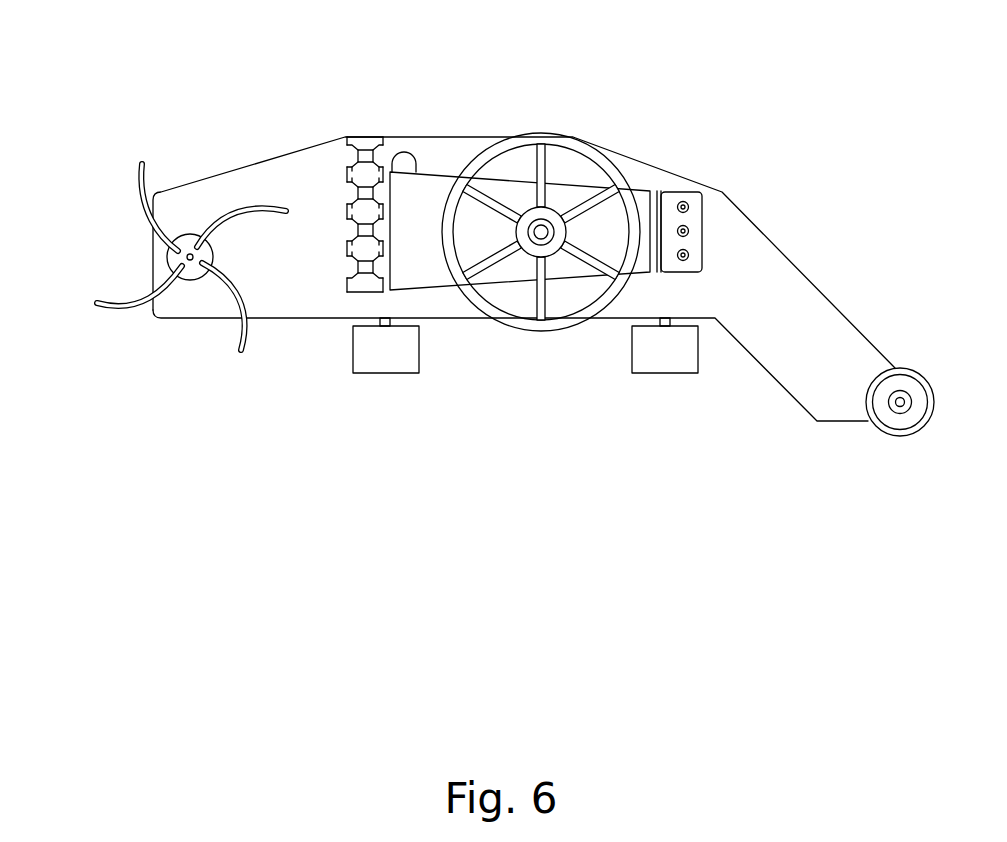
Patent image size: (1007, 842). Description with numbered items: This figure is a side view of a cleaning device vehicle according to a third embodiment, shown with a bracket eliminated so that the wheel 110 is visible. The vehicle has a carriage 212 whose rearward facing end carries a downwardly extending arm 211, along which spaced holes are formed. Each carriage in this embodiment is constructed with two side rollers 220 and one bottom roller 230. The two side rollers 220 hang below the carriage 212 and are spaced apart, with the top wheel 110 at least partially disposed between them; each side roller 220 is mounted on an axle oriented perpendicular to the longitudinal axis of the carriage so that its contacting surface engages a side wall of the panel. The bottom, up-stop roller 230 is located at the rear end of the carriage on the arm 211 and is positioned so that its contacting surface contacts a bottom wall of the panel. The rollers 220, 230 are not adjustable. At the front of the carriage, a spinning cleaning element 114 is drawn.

The wheel 110 is at (542, 140).
The spinner 114 is at (137, 178).
The downwardly extending arm 211 is at (787, 310).
The second carriage 212 is at (448, 158).
The side roller 220 is at (379, 353).
The bottom roller 230 is at (903, 435).